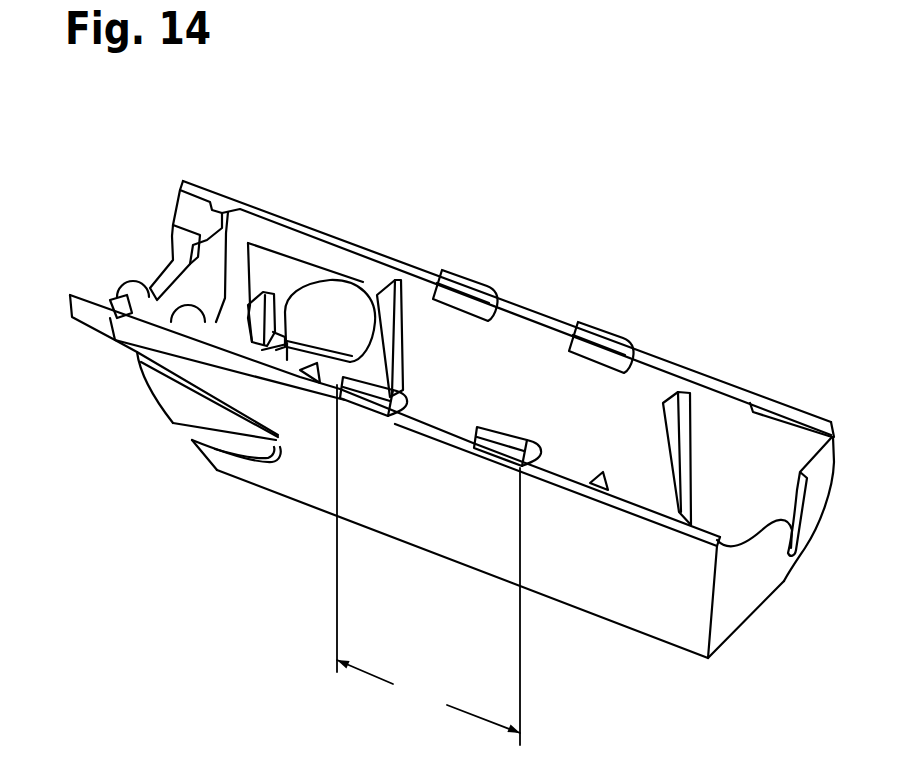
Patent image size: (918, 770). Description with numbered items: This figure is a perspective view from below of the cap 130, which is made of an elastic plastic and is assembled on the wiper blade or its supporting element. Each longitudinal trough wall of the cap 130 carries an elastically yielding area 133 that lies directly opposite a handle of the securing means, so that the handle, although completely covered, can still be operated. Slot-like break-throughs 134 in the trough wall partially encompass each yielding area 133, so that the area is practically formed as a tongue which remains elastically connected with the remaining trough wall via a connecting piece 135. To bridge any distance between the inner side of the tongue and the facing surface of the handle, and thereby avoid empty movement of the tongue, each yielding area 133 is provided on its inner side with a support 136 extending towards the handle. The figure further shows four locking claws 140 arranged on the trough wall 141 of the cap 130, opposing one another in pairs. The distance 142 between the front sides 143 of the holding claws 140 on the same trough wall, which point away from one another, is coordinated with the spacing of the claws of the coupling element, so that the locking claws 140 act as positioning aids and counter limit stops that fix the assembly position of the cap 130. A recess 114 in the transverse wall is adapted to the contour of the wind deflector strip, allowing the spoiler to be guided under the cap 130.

The recess 114 is at (160, 263).
The cap 130 is at (729, 338).
The elastically yielding area 133 is at (337, 310).
The slot-like break-through 134 is at (260, 248).
The connecting piece 135 is at (285, 448).
The support 136 is at (270, 312).
The locking claw 140 is at (473, 290).
The trough wall 141 is at (540, 313).
The distance 142 is at (428, 565).
The front side 143 is at (373, 400).